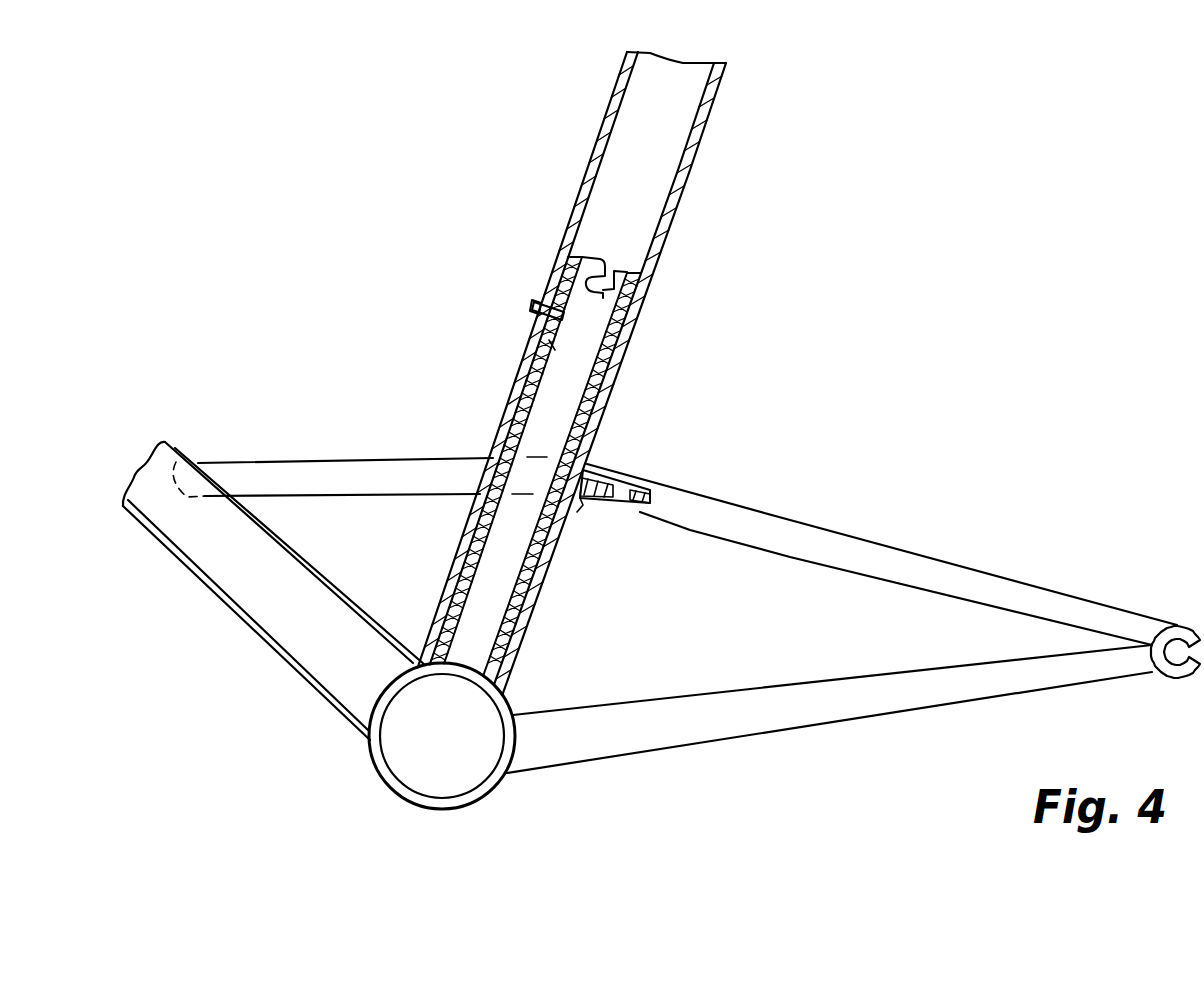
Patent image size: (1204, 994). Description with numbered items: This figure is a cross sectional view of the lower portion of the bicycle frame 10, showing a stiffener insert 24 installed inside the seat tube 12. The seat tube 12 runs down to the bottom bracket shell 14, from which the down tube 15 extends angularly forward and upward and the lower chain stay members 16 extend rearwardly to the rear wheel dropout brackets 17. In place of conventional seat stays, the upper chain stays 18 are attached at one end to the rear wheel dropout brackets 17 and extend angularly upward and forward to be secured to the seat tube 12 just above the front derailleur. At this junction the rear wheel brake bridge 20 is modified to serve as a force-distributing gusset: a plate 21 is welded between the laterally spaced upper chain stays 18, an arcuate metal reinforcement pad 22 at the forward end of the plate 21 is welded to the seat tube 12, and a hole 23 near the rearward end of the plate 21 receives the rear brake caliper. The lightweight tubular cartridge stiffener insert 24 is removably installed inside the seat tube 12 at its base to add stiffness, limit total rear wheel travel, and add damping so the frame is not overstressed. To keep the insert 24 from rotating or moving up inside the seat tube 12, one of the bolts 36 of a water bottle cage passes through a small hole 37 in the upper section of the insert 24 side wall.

The bicycle frame 10 is at (826, 224).
The seat tube 12 is at (703, 124).
The bottom bracket shell 14 is at (456, 749).
The down tube 15 is at (298, 548).
The lower chain stay members 16 is at (923, 688).
The rear wheel dropout brackets 17 is at (1175, 628).
The upper chain stays 18 is at (775, 515).
The rear wheel brake bridge 20 is at (603, 472).
The plate 21 is at (651, 500).
The arcuate metal reinforcement pad 22 is at (582, 508).
The hole 23 is at (617, 497).
The stiffener insert 24 is at (614, 327).
The bolt 36 is at (537, 303).
The hole 37 is at (552, 345).